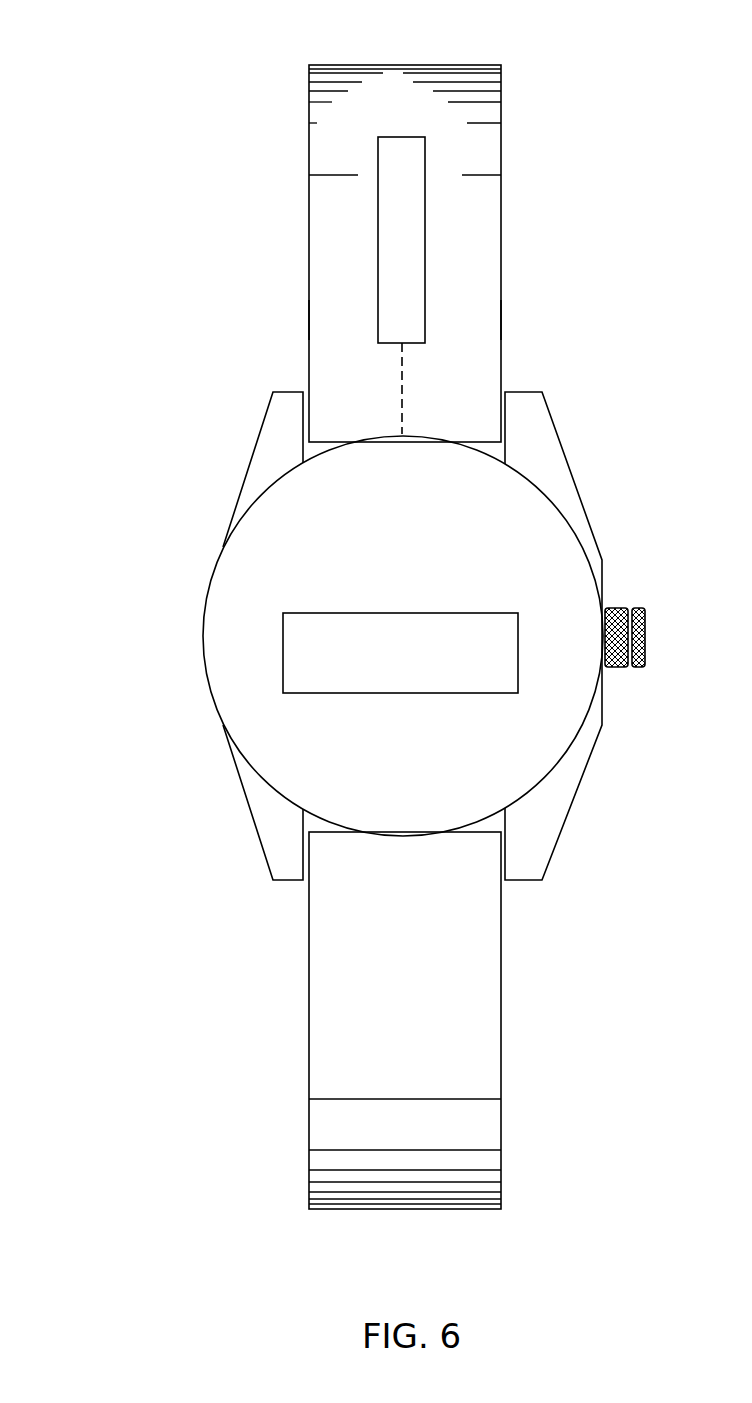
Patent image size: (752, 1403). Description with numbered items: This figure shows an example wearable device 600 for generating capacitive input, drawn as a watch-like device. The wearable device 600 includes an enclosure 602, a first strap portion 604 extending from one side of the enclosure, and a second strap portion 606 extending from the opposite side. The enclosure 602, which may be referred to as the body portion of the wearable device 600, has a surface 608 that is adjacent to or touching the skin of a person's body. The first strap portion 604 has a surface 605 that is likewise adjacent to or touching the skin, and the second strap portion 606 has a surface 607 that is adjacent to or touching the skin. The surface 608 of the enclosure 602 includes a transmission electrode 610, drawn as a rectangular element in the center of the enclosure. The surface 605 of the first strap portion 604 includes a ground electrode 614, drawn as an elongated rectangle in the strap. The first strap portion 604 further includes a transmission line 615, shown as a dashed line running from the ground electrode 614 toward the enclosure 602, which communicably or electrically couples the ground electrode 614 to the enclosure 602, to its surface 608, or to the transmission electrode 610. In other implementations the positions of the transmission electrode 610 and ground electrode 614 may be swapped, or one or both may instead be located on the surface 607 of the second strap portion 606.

The wearable device 600 is at (124, 38).
The enclosure 602 is at (557, 492).
The first strap portion 604 is at (501, 229).
The surface 605 is at (478, 327).
The second strap portion 606 is at (501, 1012).
The surface 607 is at (475, 1091).
The surface 608 is at (577, 578).
The transmission electrode 610 is at (355, 612).
The ground electrode 614 is at (402, 136).
The transmission line 615 is at (398, 397).